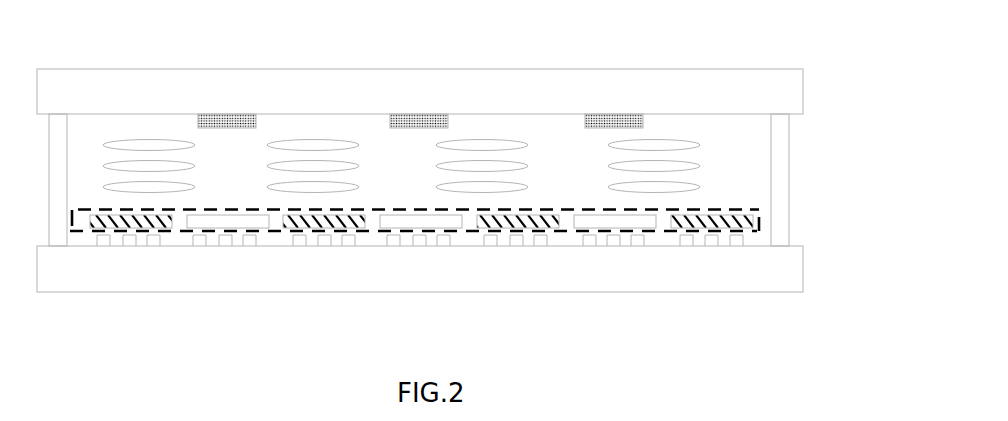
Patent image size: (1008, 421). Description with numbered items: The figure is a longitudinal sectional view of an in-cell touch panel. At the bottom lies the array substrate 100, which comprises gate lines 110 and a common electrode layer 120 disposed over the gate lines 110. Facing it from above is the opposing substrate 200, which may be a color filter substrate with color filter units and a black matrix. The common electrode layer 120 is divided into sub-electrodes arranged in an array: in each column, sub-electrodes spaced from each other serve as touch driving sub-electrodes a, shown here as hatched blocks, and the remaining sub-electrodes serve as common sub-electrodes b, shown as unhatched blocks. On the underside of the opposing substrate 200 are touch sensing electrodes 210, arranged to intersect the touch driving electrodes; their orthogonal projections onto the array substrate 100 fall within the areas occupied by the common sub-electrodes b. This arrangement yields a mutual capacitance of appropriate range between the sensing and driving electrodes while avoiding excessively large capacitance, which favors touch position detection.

The opposing substrate 200 is at (803, 90).
The array substrate 100 is at (803, 275).
The touch sensing electrode 210 is at (233, 114).
The common electrode layer 120 is at (465, 232).
The gate line 110 is at (347, 236).
The touch driving sub-electrode a is at (155, 229).
The common sub-electrode b is at (232, 221).